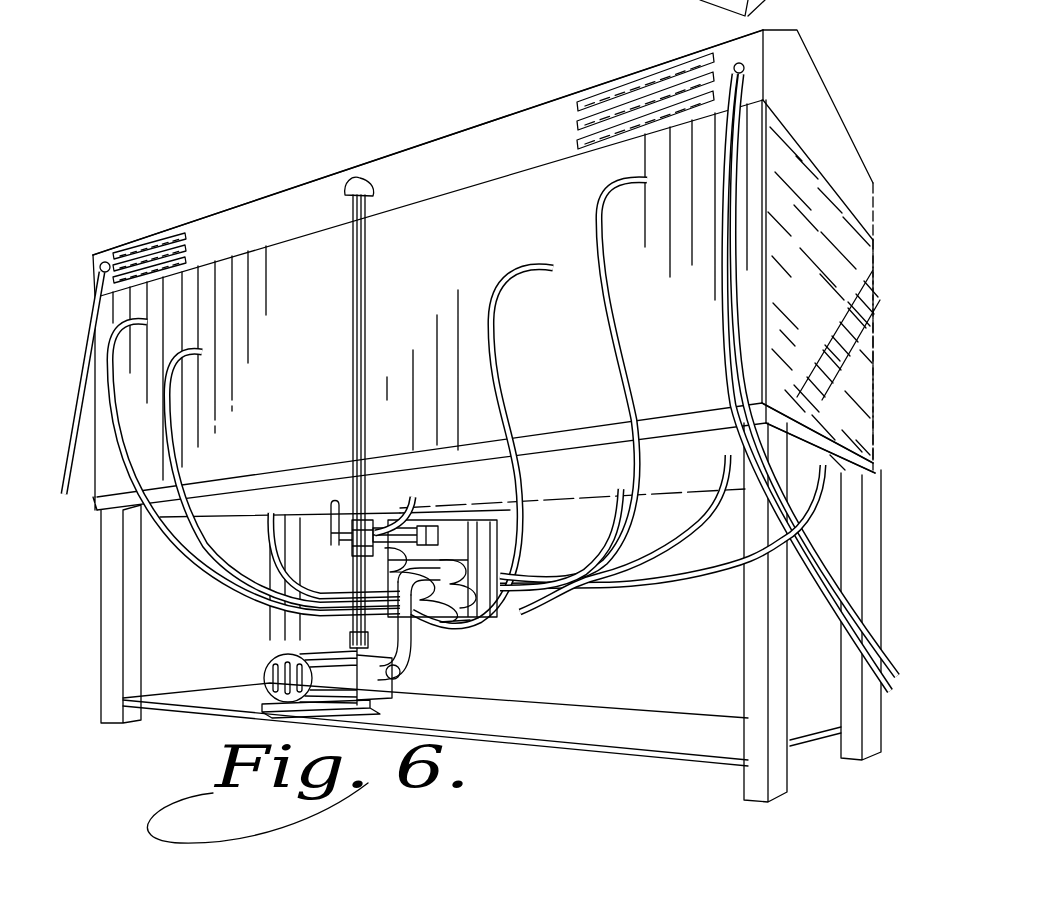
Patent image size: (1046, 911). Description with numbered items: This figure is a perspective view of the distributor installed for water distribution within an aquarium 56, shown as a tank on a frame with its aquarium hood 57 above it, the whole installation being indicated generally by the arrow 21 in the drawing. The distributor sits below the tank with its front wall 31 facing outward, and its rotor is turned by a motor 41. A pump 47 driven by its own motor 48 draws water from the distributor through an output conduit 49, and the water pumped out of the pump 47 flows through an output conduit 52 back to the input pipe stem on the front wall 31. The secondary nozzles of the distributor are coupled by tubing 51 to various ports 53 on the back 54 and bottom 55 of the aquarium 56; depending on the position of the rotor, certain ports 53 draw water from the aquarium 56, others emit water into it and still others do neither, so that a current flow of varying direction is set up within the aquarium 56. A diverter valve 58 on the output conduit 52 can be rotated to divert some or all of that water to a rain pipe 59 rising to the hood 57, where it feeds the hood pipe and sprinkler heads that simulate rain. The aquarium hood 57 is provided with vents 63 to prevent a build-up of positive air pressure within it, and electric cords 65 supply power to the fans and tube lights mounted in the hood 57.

The washing apparatus 21 is at (205, 152).
The front wall 31 is at (455, 526).
The motor 41 is at (505, 556).
The pump 47 is at (362, 690).
The motor 48 is at (272, 672).
The output conduit 49 is at (408, 638).
The tubing 51 is at (215, 553).
The output conduit 52 is at (432, 526).
The ports 53 is at (650, 182).
The back 54 is at (526, 222).
The bottom 55 is at (876, 467).
The aquarium 56 is at (870, 304).
The aquarium hood 57 is at (318, 178).
The diverter valve 58 is at (331, 531).
The rain pipe 59 is at (358, 293).
The vents 63 is at (160, 250).
The electric cords 65 is at (90, 328).